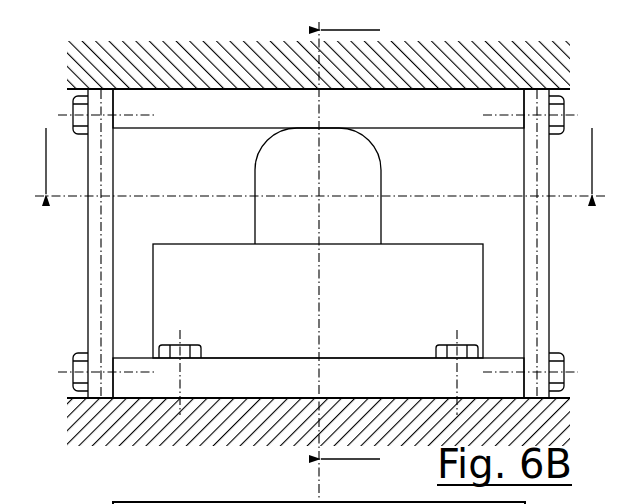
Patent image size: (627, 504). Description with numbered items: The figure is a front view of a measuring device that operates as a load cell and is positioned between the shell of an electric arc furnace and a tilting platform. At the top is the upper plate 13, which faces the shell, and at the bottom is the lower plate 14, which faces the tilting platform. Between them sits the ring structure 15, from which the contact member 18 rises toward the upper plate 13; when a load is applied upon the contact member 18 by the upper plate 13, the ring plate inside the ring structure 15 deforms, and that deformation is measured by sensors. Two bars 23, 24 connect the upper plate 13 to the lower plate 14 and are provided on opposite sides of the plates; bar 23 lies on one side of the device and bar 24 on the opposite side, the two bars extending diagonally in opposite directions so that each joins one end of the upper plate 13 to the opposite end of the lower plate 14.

The upper plate 13 is at (425, 114).
The lower plate 14 is at (425, 392).
The ring structure 15 is at (396, 244).
The contact member 18 is at (381, 177).
The bar 23 is at (113, 227).
The bar 24 is at (523, 238).